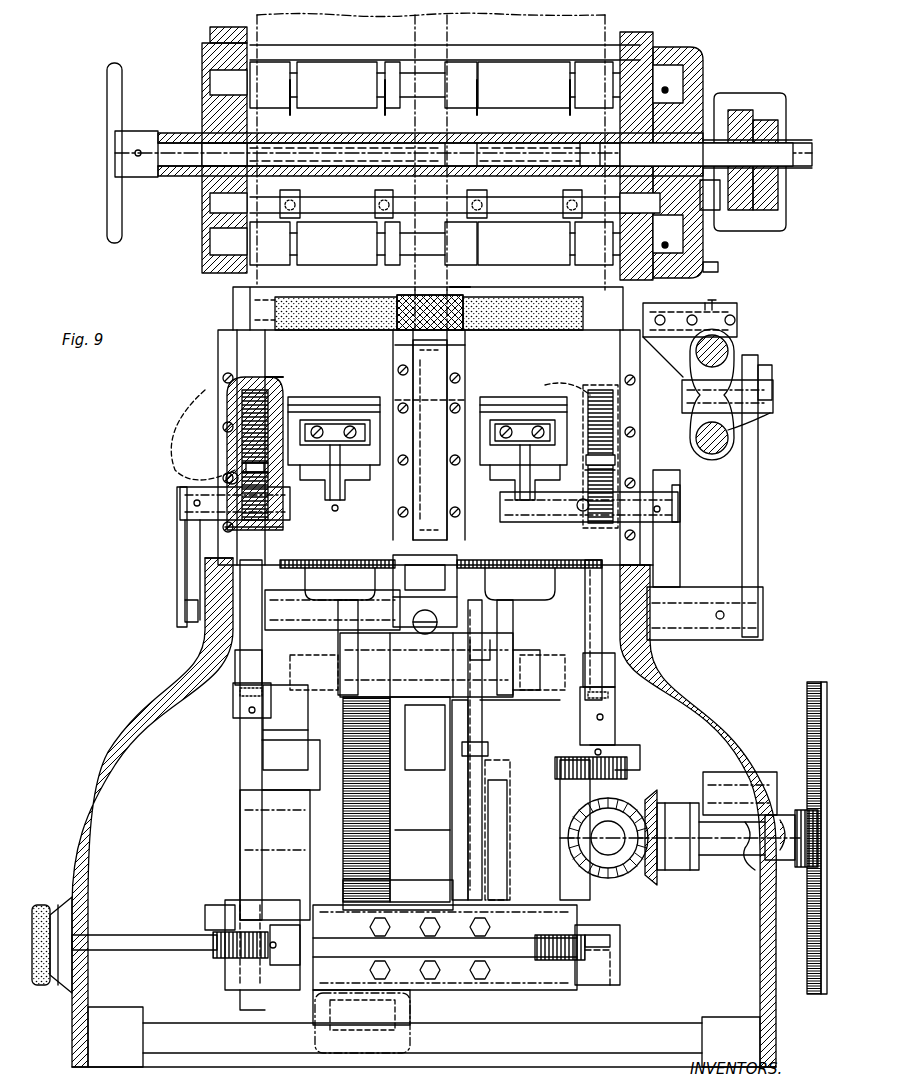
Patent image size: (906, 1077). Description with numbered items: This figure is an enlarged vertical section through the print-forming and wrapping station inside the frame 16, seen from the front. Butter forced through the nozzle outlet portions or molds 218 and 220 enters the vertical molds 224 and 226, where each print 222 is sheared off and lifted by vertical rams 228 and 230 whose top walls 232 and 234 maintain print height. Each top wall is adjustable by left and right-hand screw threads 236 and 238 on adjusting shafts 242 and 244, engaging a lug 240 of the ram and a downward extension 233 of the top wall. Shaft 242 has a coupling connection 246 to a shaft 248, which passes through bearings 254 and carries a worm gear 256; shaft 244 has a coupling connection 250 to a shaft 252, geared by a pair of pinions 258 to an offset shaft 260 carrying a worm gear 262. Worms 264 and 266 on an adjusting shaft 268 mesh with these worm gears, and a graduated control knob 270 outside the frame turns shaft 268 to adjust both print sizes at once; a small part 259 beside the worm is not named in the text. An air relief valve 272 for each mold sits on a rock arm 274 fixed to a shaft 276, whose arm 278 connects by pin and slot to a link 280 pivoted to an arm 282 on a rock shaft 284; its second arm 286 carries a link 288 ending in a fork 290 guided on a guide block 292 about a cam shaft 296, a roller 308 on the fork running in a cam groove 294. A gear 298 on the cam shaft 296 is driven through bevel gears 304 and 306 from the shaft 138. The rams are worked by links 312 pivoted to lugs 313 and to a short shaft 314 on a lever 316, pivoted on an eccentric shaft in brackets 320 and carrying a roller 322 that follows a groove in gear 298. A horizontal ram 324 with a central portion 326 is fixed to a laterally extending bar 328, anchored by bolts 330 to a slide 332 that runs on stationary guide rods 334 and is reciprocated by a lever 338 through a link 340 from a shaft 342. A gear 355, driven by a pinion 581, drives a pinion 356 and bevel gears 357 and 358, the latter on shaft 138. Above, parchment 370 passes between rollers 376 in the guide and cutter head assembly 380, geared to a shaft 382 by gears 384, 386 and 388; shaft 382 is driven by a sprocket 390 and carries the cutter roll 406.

The frame 16 is at (100, 740).
The shaft 138 is at (620, 872).
The outlet portion 218 is at (408, 424).
The outlet portion 220 is at (405, 446).
The butter print 222 is at (352, 330).
The vertical mold 224 is at (395, 350).
The vertical mold 226 is at (430, 390).
The ram 228 is at (278, 395).
The ram 230 is at (626, 386).
The top wall 232 is at (355, 295).
The downward extension 233 is at (235, 345).
The top wall 234 is at (505, 297).
The left-hand screw thread 236 is at (226, 478).
The right-hand screw thread 238 is at (227, 398).
The lug 240 is at (232, 520).
The adjusting shaft 242 is at (338, 630).
The adjusting shaft 244 is at (595, 645).
The coupling connection 246 is at (233, 700).
The shaft 248 is at (240, 762).
The coupling connection 250 is at (615, 700).
The shaft 252 is at (600, 748).
The bearings 254 is at (225, 975).
The worm gear 256 is at (213, 950).
The pinions 258 is at (570, 757).
The stop 259 is at (205, 915).
The offset shaft 260 is at (572, 760).
The worm gear 262 is at (605, 958).
The worm 264 is at (255, 985).
The worm 266 is at (545, 965).
The adjusting shaft 268 is at (115, 935).
The graduated control knob 270 is at (70, 905).
The air relief valve 272 is at (348, 422).
The rock arm 274 is at (343, 480).
The shaft 276 is at (346, 504).
The arm 278 is at (178, 520).
The link 280 is at (178, 573).
The arm 282 is at (185, 604).
The rock shaft 284 is at (280, 600).
The second arm 286 is at (480, 640).
The link 288 is at (478, 712).
The fork 290 is at (466, 768).
The guide block 292 is at (485, 818).
The groove 294 is at (500, 889).
The cam shaft 296 is at (402, 820).
The gear 298 is at (392, 870).
The bevel gear 304 is at (425, 558).
The bevel gear 306 is at (425, 640).
The roller 308 is at (489, 750).
The link 312 is at (325, 672).
The lug 313 is at (385, 570).
The short shaft 314 is at (530, 672).
The lever 316 is at (420, 740).
The brackets 320 is at (297, 685).
The roller 322 is at (343, 735).
The horizontal ram 324 is at (465, 276).
The central portion 326 is at (440, 295).
The laterally extending bar 328 is at (350, 251).
The bolts 330 is at (730, 315).
The slide 332 is at (725, 458).
The guide rods 334 is at (735, 363).
The lever 338 is at (758, 468).
The link 340 is at (732, 415).
The shaft 342 is at (765, 604).
The gear 355 is at (807, 703).
The pinion 356 is at (795, 865).
The bevel gear 357 is at (660, 815).
The bevel gear 358 is at (635, 790).
The parchment 370 is at (447, 28).
The rollers 376 is at (360, 93).
The guide and cutter head assembly 380 is at (218, 273).
The shaft 382 is at (182, 143).
The gear 384 is at (700, 72).
The gear 386 is at (700, 266).
The gear 388 is at (700, 200).
The sprocket 390 is at (732, 115).
The cutter roll 406 is at (478, 138).
The pinion 581 is at (812, 895).